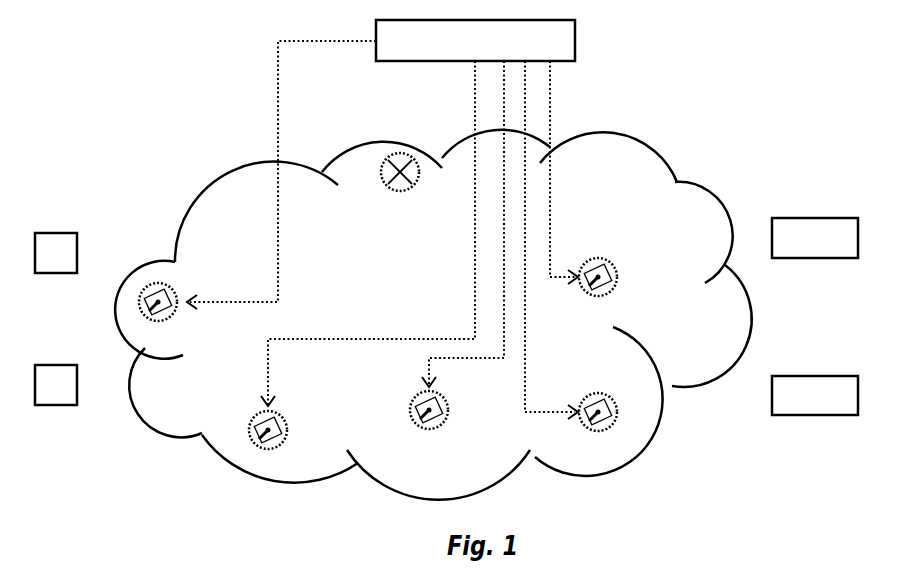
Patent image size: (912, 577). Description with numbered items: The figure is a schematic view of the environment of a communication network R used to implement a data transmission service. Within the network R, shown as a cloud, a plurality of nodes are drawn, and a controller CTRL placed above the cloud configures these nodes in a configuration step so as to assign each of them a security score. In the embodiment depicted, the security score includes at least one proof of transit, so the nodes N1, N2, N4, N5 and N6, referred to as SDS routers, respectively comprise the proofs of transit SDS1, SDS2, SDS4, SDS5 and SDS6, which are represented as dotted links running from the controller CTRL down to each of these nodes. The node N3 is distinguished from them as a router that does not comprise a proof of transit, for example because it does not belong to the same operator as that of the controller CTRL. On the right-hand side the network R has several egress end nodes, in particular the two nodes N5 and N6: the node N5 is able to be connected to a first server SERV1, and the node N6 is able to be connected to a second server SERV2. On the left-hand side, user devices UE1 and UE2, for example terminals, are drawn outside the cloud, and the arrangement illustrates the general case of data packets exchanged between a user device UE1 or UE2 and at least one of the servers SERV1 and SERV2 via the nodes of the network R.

The communication network R is at (214, 151).
The controller CTRL is at (575, 37).
The user device UE1 is at (67, 233).
The user device UE2 is at (43, 405).
The first server SERV1 is at (838, 218).
The second server SERV2 is at (792, 415).
The node N1 is at (172, 288).
The node N2 is at (250, 423).
The node N3 is at (399, 191).
The node N4 is at (433, 428).
The egress end node N5 is at (600, 257).
The egress end node N6 is at (608, 398).
The proof of transit SDS1 is at (278, 95).
The proof of transit SDS2 is at (330, 337).
The proof of transit SDS4 is at (460, 358).
The proof of transit SDS5 is at (551, 173).
The proof of transit SDS6 is at (525, 365).